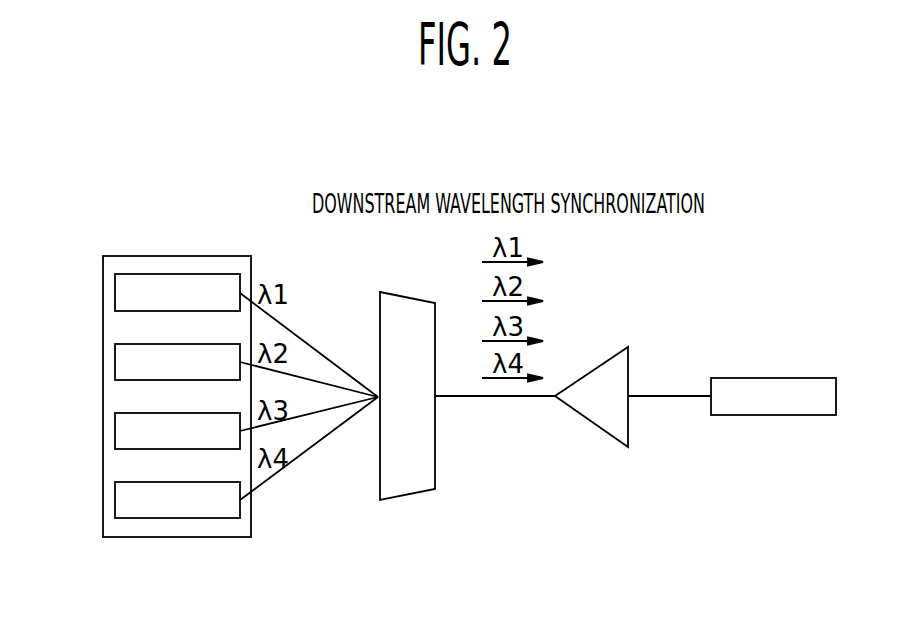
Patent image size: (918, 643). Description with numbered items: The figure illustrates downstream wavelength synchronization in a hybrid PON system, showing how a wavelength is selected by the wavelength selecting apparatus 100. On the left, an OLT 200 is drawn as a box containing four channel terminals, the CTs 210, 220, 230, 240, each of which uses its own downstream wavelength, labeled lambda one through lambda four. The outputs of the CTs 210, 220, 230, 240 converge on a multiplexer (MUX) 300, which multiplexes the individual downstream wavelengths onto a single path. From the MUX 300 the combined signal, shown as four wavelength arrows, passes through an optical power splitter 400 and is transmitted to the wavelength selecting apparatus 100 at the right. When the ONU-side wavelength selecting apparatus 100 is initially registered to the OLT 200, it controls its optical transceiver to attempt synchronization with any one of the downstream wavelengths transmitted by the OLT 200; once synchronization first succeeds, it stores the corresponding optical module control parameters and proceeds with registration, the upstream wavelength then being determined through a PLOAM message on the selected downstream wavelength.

The wavelength selecting apparatus 100 is at (774, 415).
The OLT 200 is at (177, 537).
The CT 210 is at (115, 292).
The CT 220 is at (115, 361).
The CT 230 is at (115, 431).
The CT 240 is at (115, 499).
The multiplexer (MUX) 300 is at (408, 500).
The optical power splitter 400 is at (595, 425).